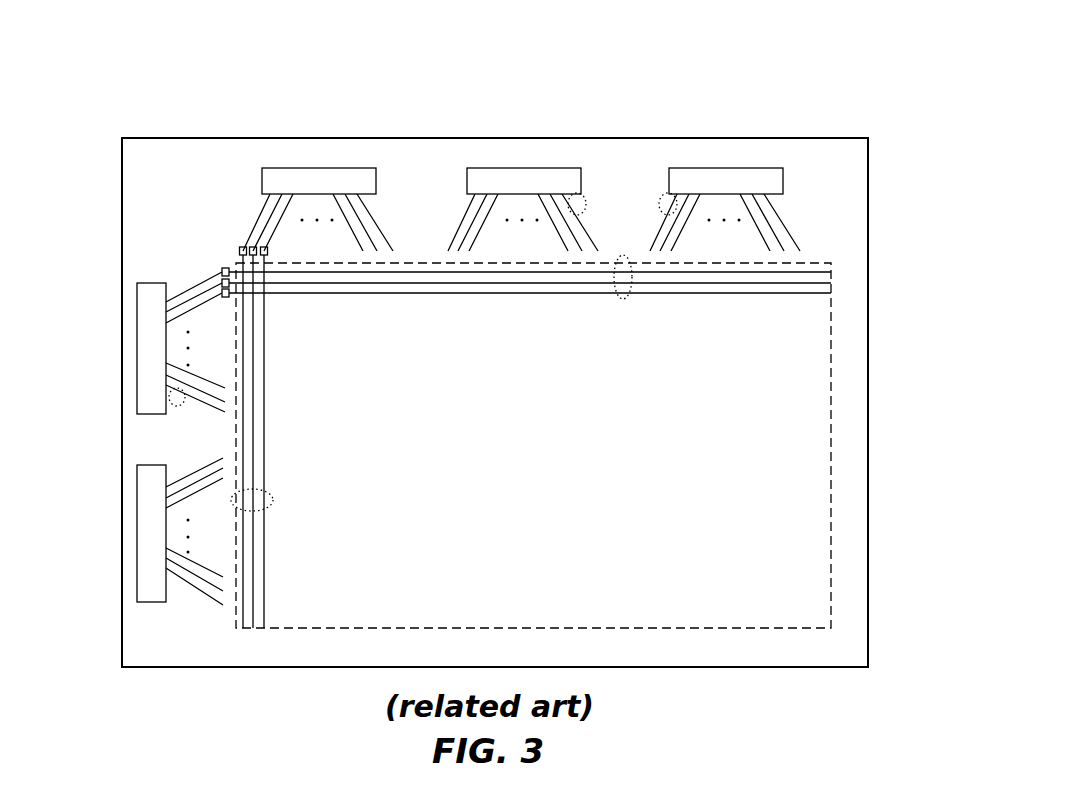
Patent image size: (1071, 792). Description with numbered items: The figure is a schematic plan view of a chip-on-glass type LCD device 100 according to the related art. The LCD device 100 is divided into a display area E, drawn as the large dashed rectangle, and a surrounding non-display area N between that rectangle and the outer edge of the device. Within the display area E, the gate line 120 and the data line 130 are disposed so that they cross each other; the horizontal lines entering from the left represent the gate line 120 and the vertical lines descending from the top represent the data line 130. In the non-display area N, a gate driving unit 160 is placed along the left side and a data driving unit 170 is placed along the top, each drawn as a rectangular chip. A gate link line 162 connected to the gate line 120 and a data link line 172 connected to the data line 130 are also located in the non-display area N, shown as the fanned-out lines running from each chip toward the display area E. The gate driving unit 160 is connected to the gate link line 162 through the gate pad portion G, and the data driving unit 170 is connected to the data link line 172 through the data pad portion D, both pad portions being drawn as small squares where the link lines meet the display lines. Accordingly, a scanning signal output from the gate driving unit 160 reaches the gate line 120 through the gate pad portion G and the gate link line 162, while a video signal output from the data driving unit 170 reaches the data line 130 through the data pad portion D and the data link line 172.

The LCD device 100 is at (842, 128).
The gate line 120 is at (631, 298).
The data line 130 is at (275, 500).
The gate driving unit 160 is at (147, 340).
The gate link line 162 is at (176, 406).
The data driving unit 170 is at (320, 181).
The data link line 172 is at (668, 197).
The non-display area N is at (155, 180).
The data pad portion D is at (243, 247).
The gate pad portion G is at (222, 272).
The display area E is at (831, 488).